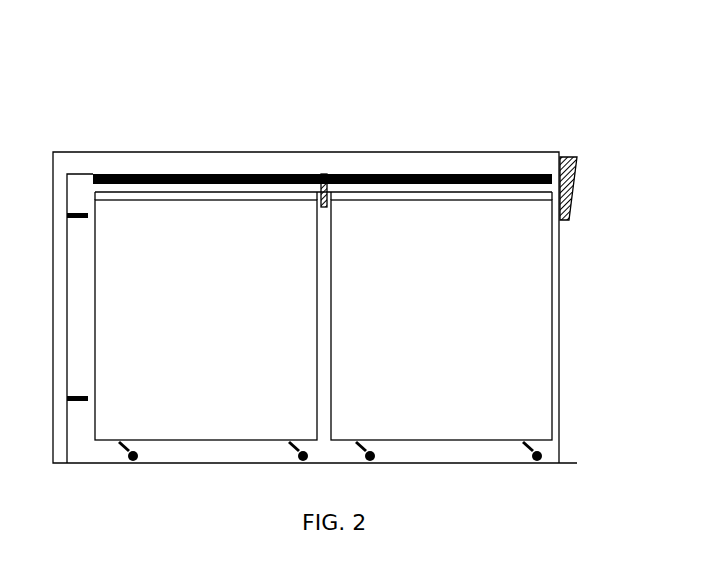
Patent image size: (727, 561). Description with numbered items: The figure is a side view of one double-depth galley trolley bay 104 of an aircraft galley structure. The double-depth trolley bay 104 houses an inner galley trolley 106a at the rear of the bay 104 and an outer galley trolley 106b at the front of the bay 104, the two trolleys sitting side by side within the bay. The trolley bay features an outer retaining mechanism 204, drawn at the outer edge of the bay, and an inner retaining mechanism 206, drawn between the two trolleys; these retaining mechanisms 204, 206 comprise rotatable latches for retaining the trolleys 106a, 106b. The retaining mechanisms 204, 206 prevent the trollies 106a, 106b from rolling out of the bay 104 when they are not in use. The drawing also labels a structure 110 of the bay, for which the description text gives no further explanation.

The double-depth galley trolley bay 104 is at (86, 109).
The frame 110 is at (68, 258).
The inner galley trolley 106a is at (225, 247).
The outer galley trolley 106b is at (457, 243).
The inner retaining mechanism 206 is at (334, 178).
The outer retaining mechanism 204 is at (577, 170).